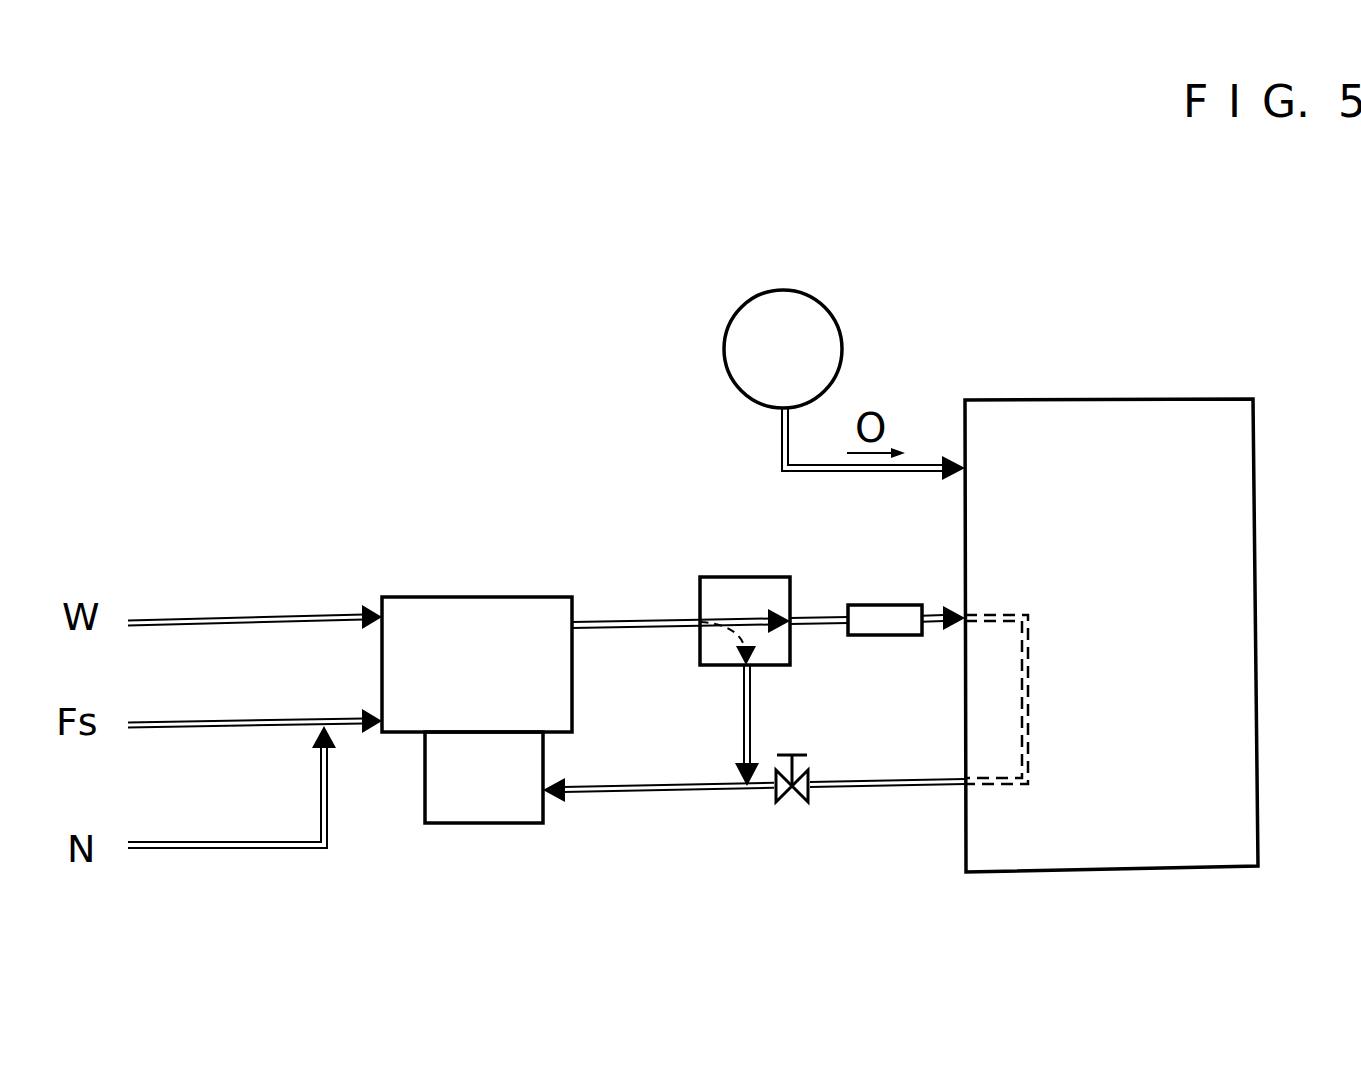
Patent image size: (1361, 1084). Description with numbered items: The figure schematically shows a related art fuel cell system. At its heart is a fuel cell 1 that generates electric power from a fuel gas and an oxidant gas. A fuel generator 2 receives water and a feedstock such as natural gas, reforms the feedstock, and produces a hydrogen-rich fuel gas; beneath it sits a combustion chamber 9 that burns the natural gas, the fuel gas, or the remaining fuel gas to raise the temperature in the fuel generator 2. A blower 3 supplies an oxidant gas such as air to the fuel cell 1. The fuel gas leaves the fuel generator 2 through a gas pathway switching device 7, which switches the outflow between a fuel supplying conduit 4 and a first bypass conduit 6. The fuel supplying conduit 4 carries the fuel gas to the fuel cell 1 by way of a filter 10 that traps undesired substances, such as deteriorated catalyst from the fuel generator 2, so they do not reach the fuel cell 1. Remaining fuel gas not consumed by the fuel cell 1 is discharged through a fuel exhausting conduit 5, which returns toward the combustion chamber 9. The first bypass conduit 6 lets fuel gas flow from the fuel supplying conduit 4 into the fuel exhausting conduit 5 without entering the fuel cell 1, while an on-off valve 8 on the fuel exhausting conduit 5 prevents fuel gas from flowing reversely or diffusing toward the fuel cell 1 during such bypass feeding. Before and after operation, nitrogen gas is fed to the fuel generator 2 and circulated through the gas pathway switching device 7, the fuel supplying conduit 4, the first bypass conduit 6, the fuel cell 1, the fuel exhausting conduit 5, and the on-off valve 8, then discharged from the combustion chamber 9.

The fuel cell 1 is at (1148, 420).
The fuel generator 2 is at (477, 664).
The blower 3 is at (844, 385).
The fuel supplying conduit 4 is at (812, 618).
The fuel exhausting conduit 5 is at (643, 785).
The first bypass conduit 6 is at (751, 716).
The gas pathway switching device 7 is at (748, 577).
The on-off valve 8 is at (800, 800).
The combustion chamber 9 is at (484, 777).
The filter 10 is at (879, 635).